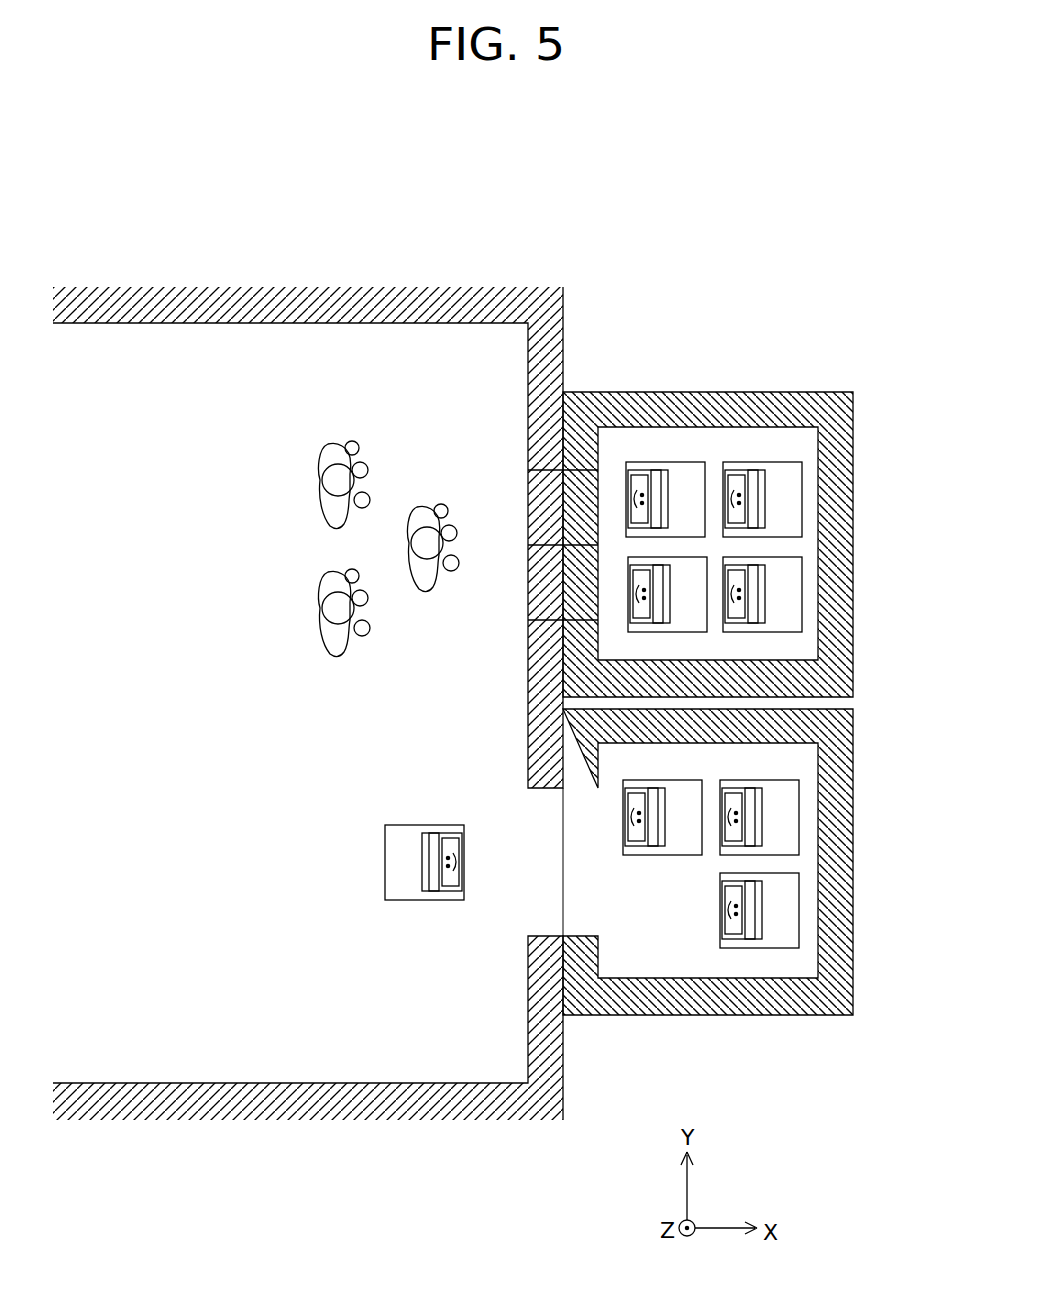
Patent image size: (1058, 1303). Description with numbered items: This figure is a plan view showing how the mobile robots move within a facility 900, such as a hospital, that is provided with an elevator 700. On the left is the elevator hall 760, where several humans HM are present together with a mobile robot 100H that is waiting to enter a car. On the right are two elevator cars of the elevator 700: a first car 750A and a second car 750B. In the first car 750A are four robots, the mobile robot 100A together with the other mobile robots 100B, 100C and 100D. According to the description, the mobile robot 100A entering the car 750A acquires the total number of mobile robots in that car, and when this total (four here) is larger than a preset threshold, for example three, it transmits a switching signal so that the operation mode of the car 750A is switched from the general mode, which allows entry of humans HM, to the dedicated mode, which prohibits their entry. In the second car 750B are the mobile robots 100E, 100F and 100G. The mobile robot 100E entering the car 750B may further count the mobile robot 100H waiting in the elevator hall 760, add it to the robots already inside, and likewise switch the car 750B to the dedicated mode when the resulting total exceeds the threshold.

The facility 900 is at (308, 637).
The elevator hall 760 is at (123, 372).
The elevator 700 is at (736, 666).
The car 750A is at (736, 480).
The car 750B is at (754, 911).
The mobile robot 100A is at (786, 595).
The mobile robot 100B is at (785, 502).
The mobile robot 100C is at (683, 480).
The mobile robot 100D is at (680, 607).
The mobile robot 100E is at (783, 912).
The mobile robot 100F is at (783, 818).
The mobile robot 100G is at (680, 798).
The mobile robot 100H is at (385, 863).
The human HM is at (292, 491).